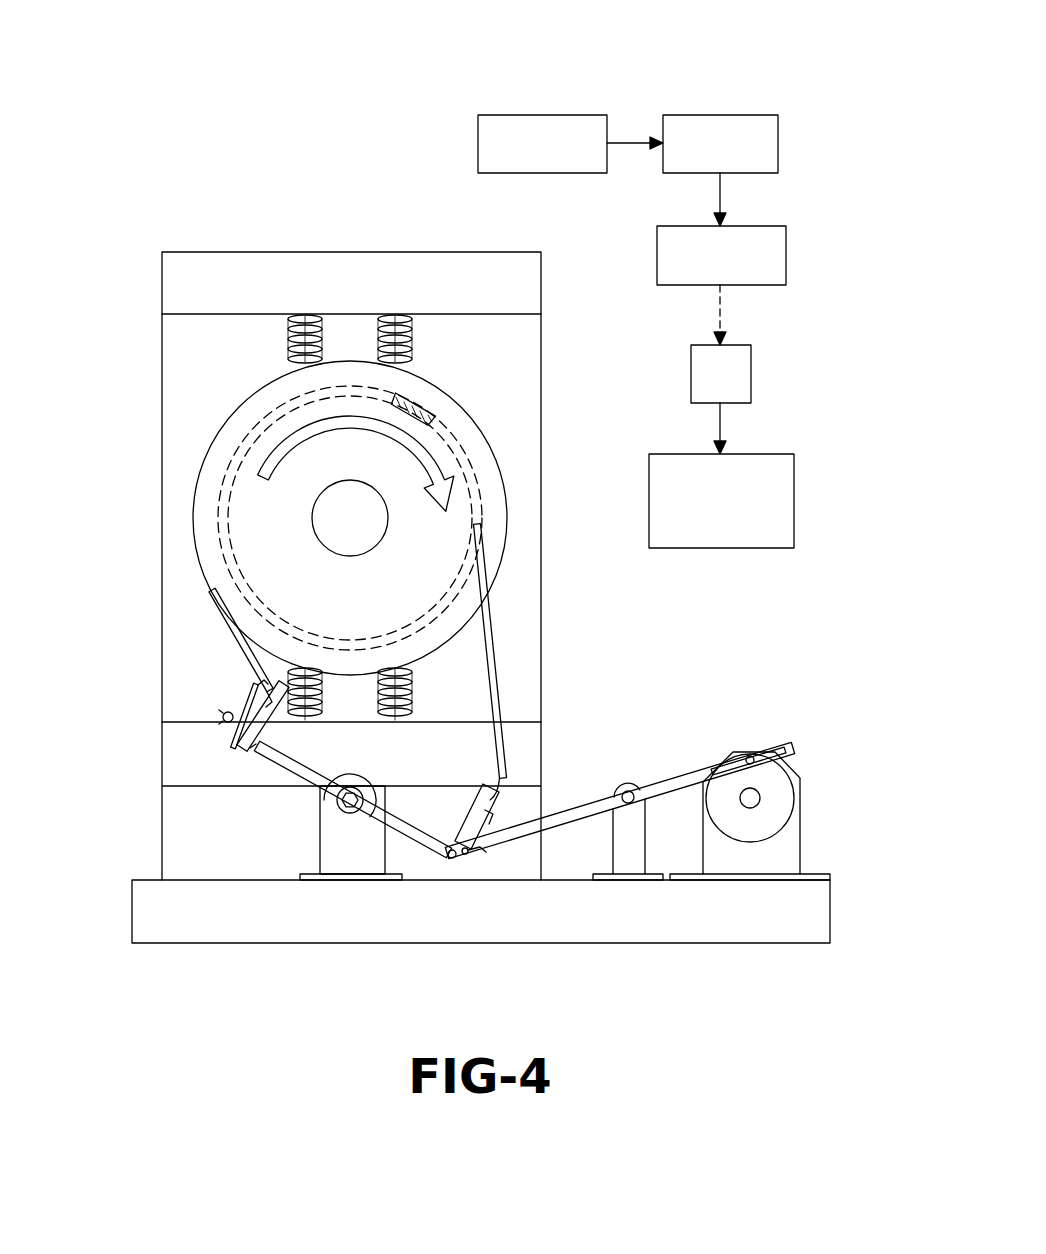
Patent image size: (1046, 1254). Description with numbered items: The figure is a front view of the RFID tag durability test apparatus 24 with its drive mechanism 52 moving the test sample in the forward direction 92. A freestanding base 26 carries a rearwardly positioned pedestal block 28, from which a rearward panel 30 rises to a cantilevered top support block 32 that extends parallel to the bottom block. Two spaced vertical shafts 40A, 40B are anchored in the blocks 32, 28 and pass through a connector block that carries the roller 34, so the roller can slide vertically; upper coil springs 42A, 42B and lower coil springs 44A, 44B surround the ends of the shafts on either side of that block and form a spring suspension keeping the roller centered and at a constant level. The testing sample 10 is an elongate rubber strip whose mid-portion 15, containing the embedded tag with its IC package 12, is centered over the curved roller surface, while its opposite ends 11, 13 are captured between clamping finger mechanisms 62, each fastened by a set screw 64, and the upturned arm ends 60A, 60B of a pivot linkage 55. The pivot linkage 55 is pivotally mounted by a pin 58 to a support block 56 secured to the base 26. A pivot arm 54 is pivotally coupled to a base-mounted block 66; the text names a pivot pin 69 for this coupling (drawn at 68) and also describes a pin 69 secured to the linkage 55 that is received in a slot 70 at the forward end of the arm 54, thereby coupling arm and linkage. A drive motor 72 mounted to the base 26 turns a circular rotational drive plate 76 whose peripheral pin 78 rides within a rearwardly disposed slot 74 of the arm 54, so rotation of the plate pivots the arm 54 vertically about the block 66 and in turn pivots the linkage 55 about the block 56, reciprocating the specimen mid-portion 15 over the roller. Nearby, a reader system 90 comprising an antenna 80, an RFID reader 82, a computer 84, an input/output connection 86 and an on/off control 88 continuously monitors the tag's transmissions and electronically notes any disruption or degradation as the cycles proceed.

The testing sample 10 is at (462, 430).
The strip end 11 is at (255, 662).
The IC package 12 is at (428, 405).
The strip end 13 is at (500, 800).
The mid-portion 15 is at (413, 388).
The test apparatus 24 is at (160, 988).
The base 26 is at (498, 944).
The pedestal block 28 is at (185, 828).
The rearward panel 30 is at (188, 577).
The top support block 32 is at (190, 293).
The roller 34 is at (206, 424).
The vertical shaft 40A is at (297, 348).
The vertical shaft 40B is at (407, 350).
The upper coil spring 42A is at (308, 332).
The upper coil spring 42B is at (396, 330).
The lower coil spring 44A is at (303, 677).
The lower coil spring 44B is at (395, 693).
The drive mechanism 52 is at (272, 776).
The pivot arm 54 is at (678, 782).
The pivot linkage 55 is at (252, 752).
The support block 56 is at (345, 862).
The pin 58 is at (343, 793).
The upturned arm end 60A is at (262, 672).
The upturned arm end 60B is at (472, 817).
The clamping finger mechanism 62 is at (242, 692).
The set screw 64 is at (233, 715).
The base-mounted block 66 is at (627, 838).
The link pivot 68 is at (623, 793).
The pivot pin 69 is at (458, 858).
The slot 70 is at (470, 858).
The drive motor 72 is at (772, 857).
The rearwardly disposed slot 74 is at (788, 743).
The rotational drive plate 76 is at (772, 810).
The peripheral pin 78 is at (748, 757).
The antenna 80 is at (537, 115).
The RFID reader 82 is at (720, 115).
The computer 84 is at (757, 226).
The input/output connection 86 is at (751, 372).
The on/off control 88 is at (768, 454).
The reader system 90 is at (472, 84).
The direction 92 is at (318, 430).